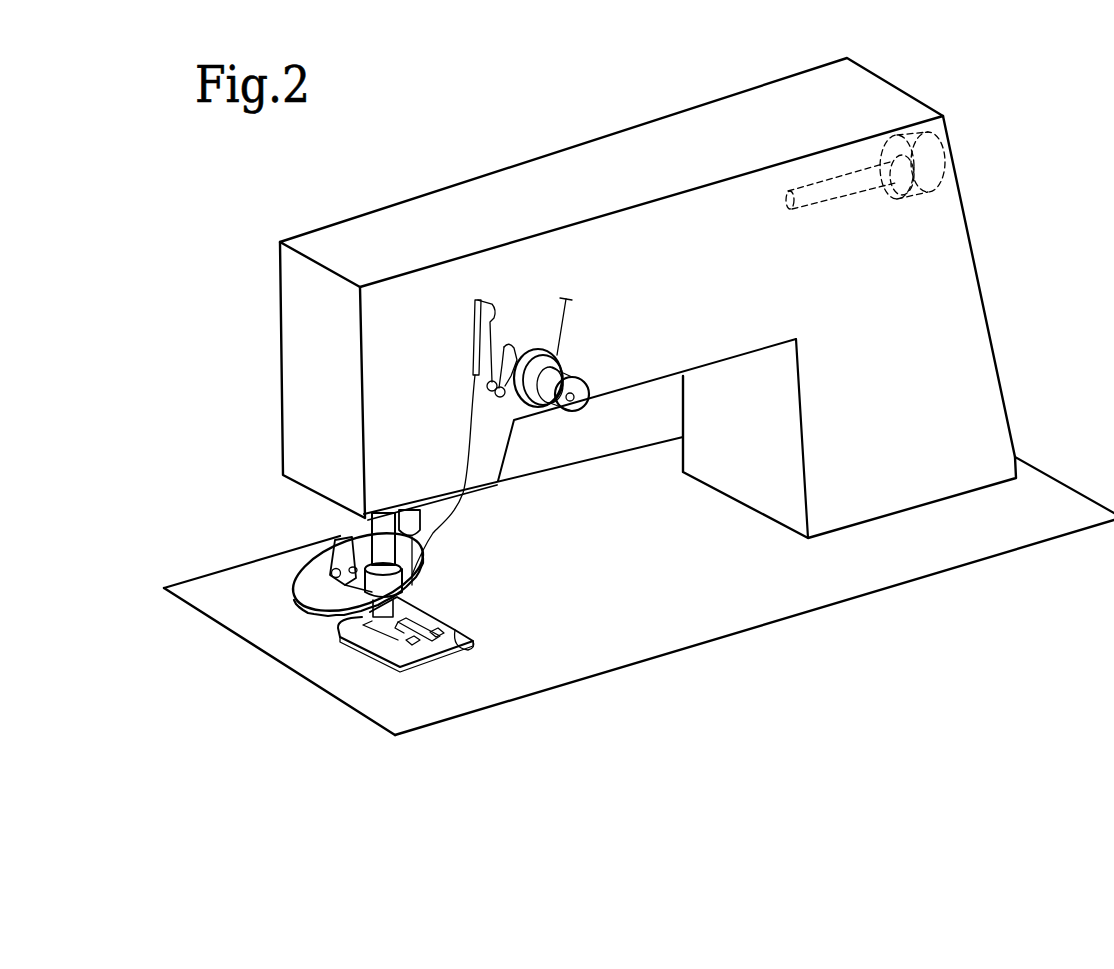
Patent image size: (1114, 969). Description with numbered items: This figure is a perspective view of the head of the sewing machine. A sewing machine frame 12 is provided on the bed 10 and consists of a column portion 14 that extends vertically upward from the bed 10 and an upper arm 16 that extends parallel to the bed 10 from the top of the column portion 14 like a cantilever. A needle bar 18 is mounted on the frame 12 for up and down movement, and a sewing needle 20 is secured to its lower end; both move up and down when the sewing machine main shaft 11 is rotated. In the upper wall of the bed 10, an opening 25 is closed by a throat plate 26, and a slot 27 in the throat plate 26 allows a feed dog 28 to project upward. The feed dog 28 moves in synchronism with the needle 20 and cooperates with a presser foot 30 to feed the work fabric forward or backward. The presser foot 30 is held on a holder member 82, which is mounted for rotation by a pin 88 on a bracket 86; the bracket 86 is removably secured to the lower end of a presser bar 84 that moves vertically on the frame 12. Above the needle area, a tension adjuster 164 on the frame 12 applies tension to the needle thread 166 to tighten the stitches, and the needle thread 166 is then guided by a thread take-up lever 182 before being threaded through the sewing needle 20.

The bed 10 is at (1045, 528).
The sewing machine main shaft 11 is at (848, 197).
The sewing machine frame 12 is at (984, 136).
The column portion 14 is at (977, 372).
The upper arm 16 is at (695, 122).
The needle bar 18 is at (417, 522).
The sewing needle 20 is at (423, 568).
The opening 25 is at (463, 643).
The throat plate 26 is at (467, 635).
The slot 27 is at (457, 632).
The feed dog 28 is at (449, 645).
The presser foot 30 is at (335, 622).
The holder member 82 is at (307, 572).
The presser bar 84 is at (377, 527).
The bracket 86 is at (340, 548).
The pin 88 is at (337, 572).
The tension adjuster 164 is at (592, 414).
The needle thread 166 is at (567, 328).
The thread take-up lever 182 is at (493, 307).